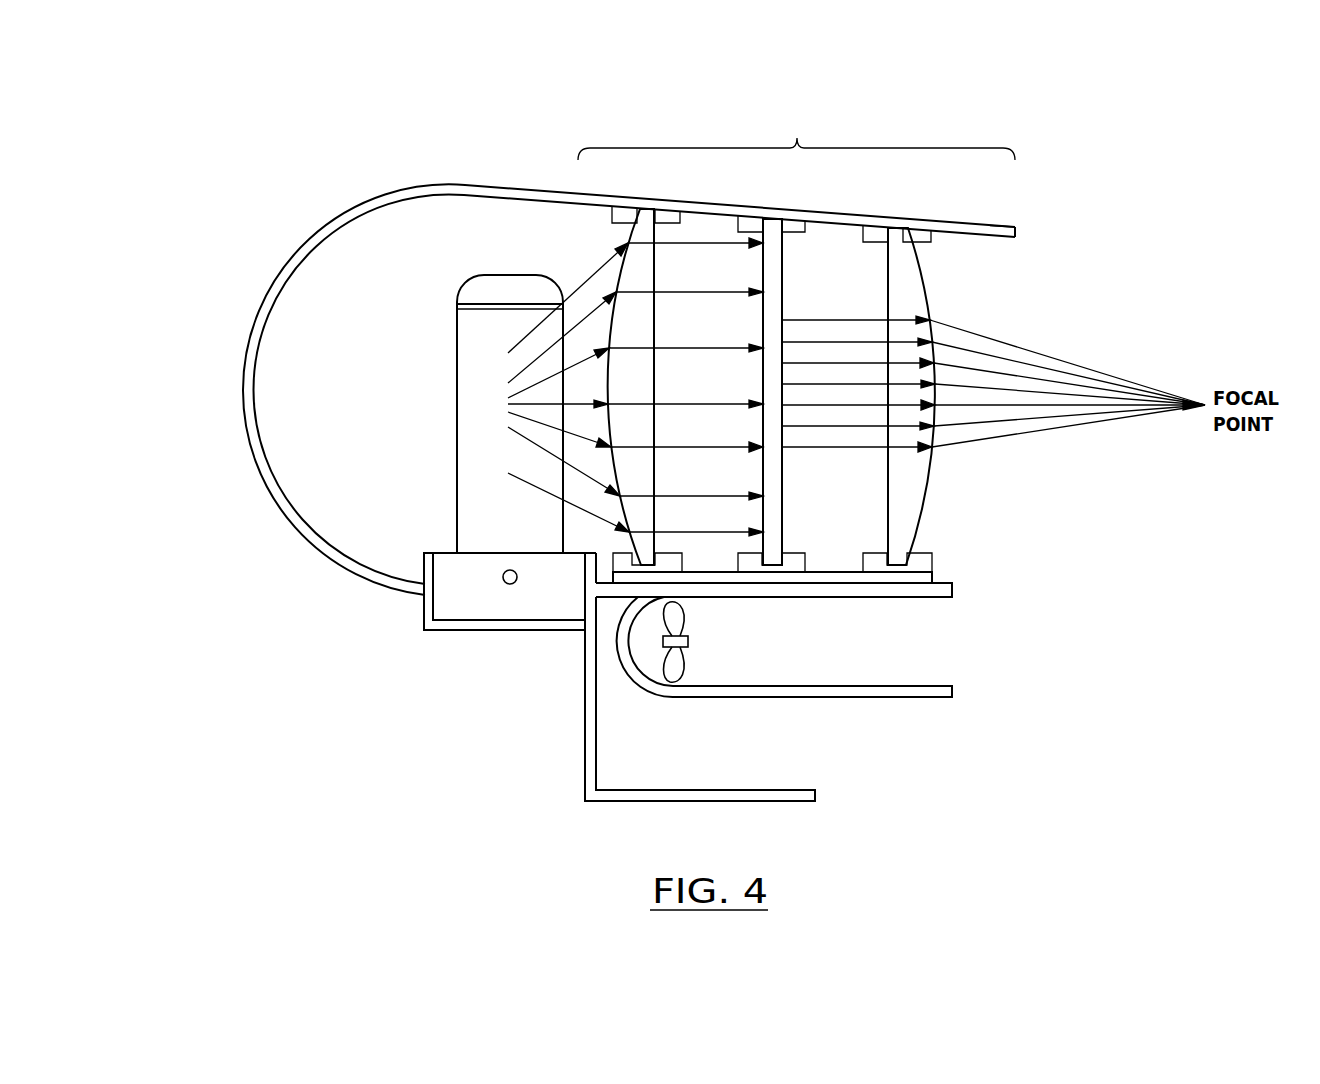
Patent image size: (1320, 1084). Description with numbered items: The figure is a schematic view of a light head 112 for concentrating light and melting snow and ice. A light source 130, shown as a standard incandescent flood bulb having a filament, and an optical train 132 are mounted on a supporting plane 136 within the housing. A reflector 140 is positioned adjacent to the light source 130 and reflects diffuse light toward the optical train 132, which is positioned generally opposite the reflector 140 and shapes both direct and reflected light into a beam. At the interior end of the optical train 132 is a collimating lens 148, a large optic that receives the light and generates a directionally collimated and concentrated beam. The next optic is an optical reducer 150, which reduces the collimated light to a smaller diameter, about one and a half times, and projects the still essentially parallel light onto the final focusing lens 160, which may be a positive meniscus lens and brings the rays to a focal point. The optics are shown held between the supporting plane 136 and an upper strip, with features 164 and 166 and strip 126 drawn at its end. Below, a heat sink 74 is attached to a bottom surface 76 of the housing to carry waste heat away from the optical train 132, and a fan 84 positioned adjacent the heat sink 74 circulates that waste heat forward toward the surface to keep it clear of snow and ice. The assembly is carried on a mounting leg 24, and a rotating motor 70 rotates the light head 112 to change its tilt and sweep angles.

The light head 112 is at (1070, 120).
The optical train 132 is at (796, 136).
The collimating lens 148 is at (648, 205).
The optical reducer 150 is at (776, 212).
The final focusing lens 160 is at (897, 224).
The top surface of support strip 164 is at (1000, 227).
The end of support strip 166 is at (1020, 234).
The support strip 126 is at (957, 240).
The light source 130 is at (458, 355).
The reflector 140 is at (245, 425).
The supporting plane 136 is at (918, 580).
The heat sink 74 is at (905, 592).
The bottom surface 76 is at (917, 600).
The rotating motor 70 is at (517, 607).
The mounting leg 24 is at (586, 749).
The fan 84 is at (677, 673).